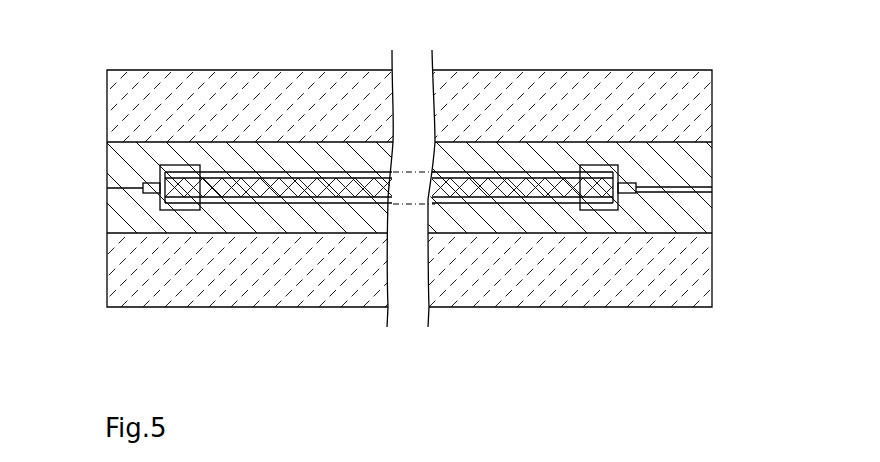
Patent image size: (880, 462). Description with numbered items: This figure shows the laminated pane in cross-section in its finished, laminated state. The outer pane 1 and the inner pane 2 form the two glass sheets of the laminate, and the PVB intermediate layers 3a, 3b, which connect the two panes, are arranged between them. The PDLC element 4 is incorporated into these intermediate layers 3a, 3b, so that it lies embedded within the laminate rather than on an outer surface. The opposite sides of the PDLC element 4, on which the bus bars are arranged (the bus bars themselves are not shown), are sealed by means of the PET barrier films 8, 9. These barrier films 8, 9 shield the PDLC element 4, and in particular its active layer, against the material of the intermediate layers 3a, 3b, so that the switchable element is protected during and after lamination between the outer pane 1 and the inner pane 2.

The outer pane 1 is at (760, 106).
The inner pane 2 is at (760, 270).
The PVB intermediate layer 3a is at (758, 161).
The PVB intermediate layer 3b is at (758, 215).
The PDLC element 4 is at (412, 166).
The PET barrier film 8 is at (183, 335).
The PET barrier film 9 is at (656, 193).